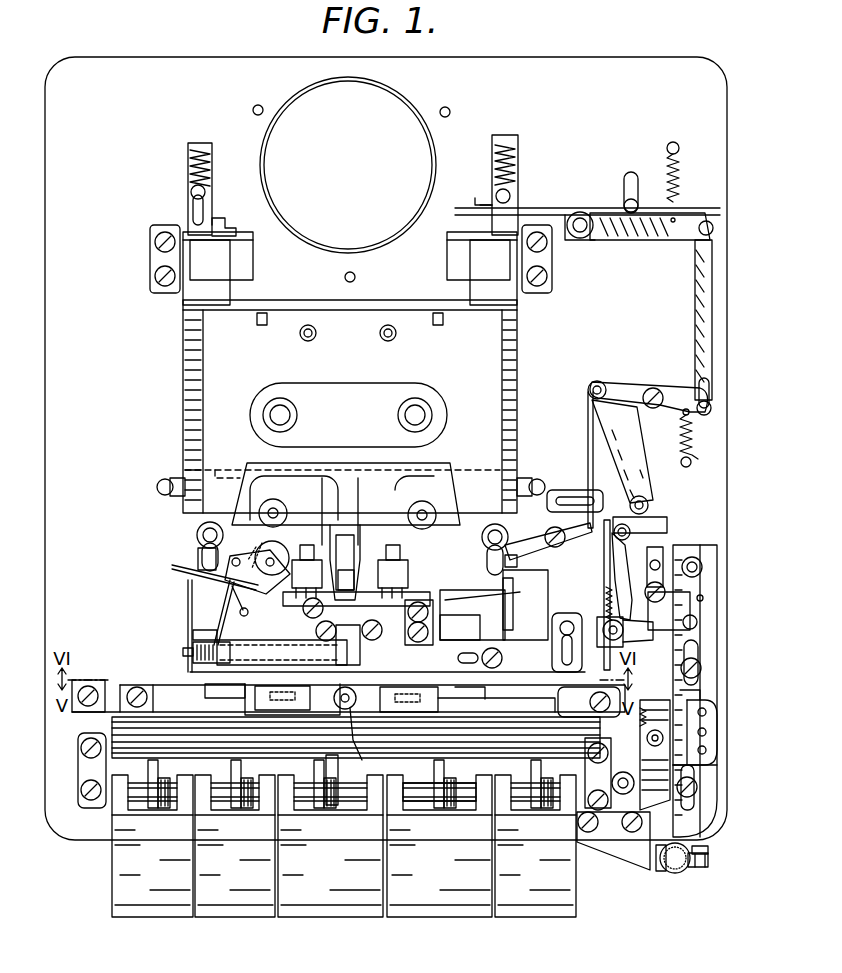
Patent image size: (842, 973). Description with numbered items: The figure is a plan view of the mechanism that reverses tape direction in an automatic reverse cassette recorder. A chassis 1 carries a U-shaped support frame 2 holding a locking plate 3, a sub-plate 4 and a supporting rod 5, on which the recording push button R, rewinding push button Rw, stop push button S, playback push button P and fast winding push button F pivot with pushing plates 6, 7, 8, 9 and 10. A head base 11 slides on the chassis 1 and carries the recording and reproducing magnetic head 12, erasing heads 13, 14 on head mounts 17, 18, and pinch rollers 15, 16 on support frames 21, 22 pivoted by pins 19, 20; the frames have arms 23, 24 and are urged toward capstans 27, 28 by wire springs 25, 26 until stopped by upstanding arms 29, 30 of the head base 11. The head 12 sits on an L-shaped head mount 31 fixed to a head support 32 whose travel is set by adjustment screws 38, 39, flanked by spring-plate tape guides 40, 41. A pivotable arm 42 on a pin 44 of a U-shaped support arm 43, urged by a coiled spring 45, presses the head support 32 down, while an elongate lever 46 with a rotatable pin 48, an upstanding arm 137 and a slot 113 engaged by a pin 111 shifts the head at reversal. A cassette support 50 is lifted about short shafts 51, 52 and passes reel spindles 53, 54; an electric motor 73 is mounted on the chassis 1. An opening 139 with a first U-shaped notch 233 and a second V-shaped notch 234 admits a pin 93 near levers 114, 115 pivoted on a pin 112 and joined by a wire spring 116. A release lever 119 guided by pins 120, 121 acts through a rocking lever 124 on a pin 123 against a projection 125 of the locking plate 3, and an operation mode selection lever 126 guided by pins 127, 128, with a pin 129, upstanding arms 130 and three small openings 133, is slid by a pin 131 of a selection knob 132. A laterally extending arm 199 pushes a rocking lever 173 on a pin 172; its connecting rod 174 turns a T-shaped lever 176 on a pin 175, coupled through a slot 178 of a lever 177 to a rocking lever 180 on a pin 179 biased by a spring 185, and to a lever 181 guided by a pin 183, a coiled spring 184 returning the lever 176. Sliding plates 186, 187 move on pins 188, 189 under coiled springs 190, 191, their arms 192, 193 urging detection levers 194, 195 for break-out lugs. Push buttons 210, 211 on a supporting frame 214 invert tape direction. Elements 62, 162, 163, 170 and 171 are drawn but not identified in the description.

The chassis 1 is at (248, 66).
The U-shaped support frame 2 is at (80, 789).
The locking plate 3 is at (112, 728).
The sub-plate 4 is at (80, 757).
The supporting rod 5 is at (418, 786).
The pushing plate 6 is at (160, 778).
The pushing plate 7 is at (236, 778).
The pushing plate 8 is at (326, 775).
The pushing plate 9 is at (446, 778).
The pushing plate 10 is at (533, 778).
The head base 11 is at (197, 535).
The recording and reproducing magnetic head 12 is at (345, 550).
The erasing head 13 is at (306, 545).
The erasing head 14 is at (390, 550).
The pinch roller 15 is at (245, 544).
The pinch roller 16 is at (485, 545).
The head mount 17 is at (300, 598).
The head mount 18 is at (410, 640).
The pin 19 is at (198, 560).
The pin 20 is at (493, 573).
The support frame 21 is at (172, 567).
The support frame 22 is at (514, 596).
The arm 23 is at (205, 612).
The arm 24 is at (465, 628).
The wire spring 25 is at (188, 585).
The wire spring 26 is at (455, 605).
The capstan 27 is at (260, 506).
The capstan 28 is at (436, 512).
The upstanding arm 29 is at (190, 600).
The upstanding arm 30 is at (503, 606).
The head mount 31 is at (343, 578).
The head support 32 is at (348, 650).
The adjustment screw 38 is at (318, 630).
The adjustment screw 39 is at (372, 640).
The tape guide 40 is at (328, 520).
The tape guide 41 is at (362, 520).
The pivotable arm 42 is at (252, 696).
The U-shaped support arm 43 is at (190, 662).
The pin 44 is at (193, 638).
The coiled spring 45 is at (218, 698).
The elongate lever 46 is at (589, 702).
The rotatable pin 48 is at (262, 648).
The cassette support 50 is at (200, 360).
The short shaft 51 is at (200, 255).
The short shaft 52 is at (510, 258).
The reel spindle 53 is at (296, 413).
The reel spindle 54 is at (398, 413).
The pivot 62 is at (365, 758).
The electric motor 73 is at (348, 165).
The upstanding pin 93 is at (632, 532).
The upstanding pin 111 is at (560, 628).
The upstanding pin 112 is at (638, 650).
The slot 113 is at (562, 652).
The lever 114 is at (604, 557).
The lever 115 is at (690, 635).
The wire spring 116 is at (604, 604).
The release lever 119 is at (706, 712).
The pin 120 is at (708, 764).
The pin 121 is at (720, 575).
The pin 123 is at (620, 812).
The rocking lever 124 is at (628, 775).
The projection 125 is at (590, 770).
The operation mode selection lever 126 is at (702, 690).
The pin 127 is at (698, 790).
The pin 128 is at (698, 668).
The pin 129 is at (698, 622).
The upstanding arms 130 is at (708, 862).
The pin 131 is at (708, 848).
The operation mode selection knob 132 is at (672, 873).
The small openings 133 is at (706, 732).
The upstanding arm 137 is at (458, 658).
The opening 139 is at (650, 517).
The pin 162 is at (626, 204).
The pin 163 is at (626, 176).
The pivot 170 is at (705, 570).
The hole 171 is at (704, 598).
The pin 172 is at (560, 524).
The rocking lever 173 is at (600, 470).
The connecting rod 174 is at (588, 425).
The pin 175 is at (650, 388).
The T-shaped lever 176 is at (603, 372).
The lever 177 is at (695, 318).
The slot 178 is at (700, 385).
The pin 179 is at (583, 237).
The rocking lever 180 is at (640, 240).
The lever 181 is at (585, 493).
The pin 183 is at (625, 500).
The coiled spring 184 is at (695, 440).
The spring 185 is at (680, 170).
The sliding plate 186 is at (193, 212).
The sliding plate 187 is at (490, 175).
The pin 188 is at (191, 190).
The pin 189 is at (512, 196).
The coiled spring 190 is at (190, 160).
The coiled spring 191 is at (514, 160).
The inwardly extending arm 192 is at (225, 212).
The inwardly extending arm 193 is at (478, 202).
The detection lever 194 is at (230, 262).
The detection lever 195 is at (470, 258).
The laterally extending arm 199 is at (518, 558).
The push button 210 is at (440, 700).
The push button 211 is at (310, 742).
The supporting frame 214 is at (152, 690).
The first U-shaped notch 233 is at (614, 578).
The second V-shaped notch 234 is at (664, 560).
The recording push button R is at (158, 915).
The rewinding push button Rw is at (252, 915).
The stop push button S is at (334, 915).
The playback push button P is at (446, 915).
The fast winding push button F is at (544, 915).